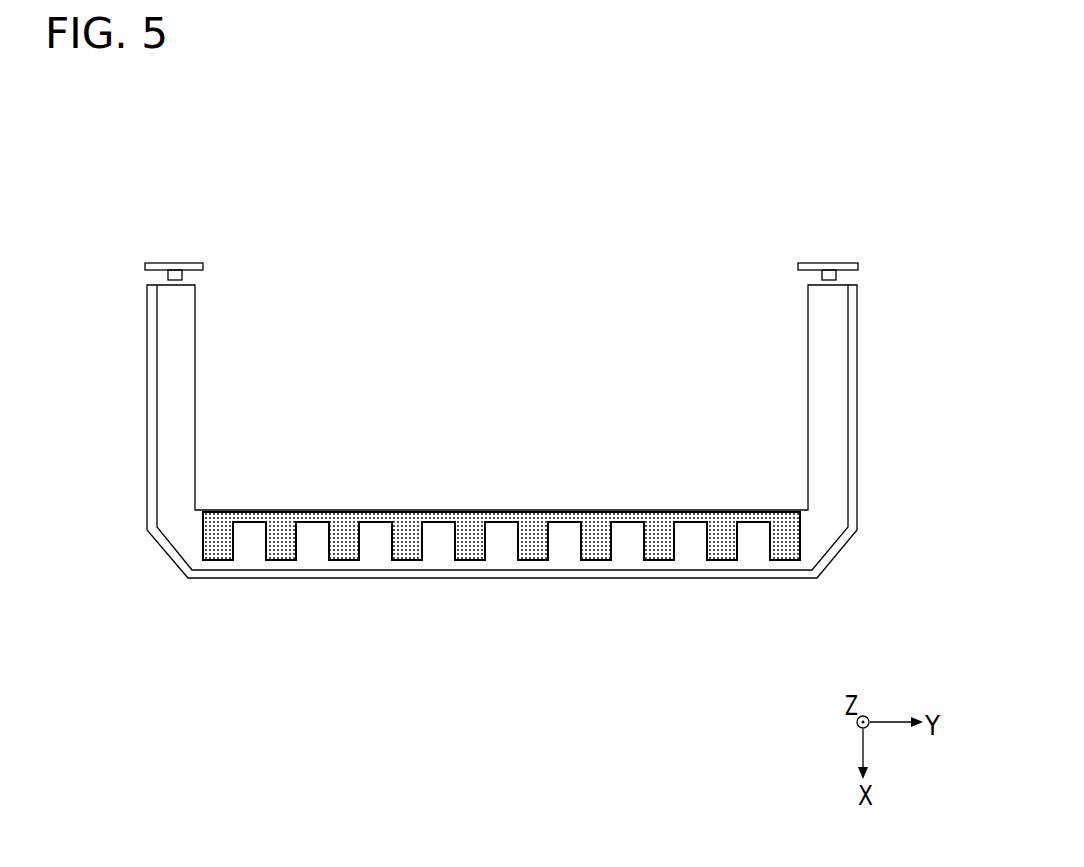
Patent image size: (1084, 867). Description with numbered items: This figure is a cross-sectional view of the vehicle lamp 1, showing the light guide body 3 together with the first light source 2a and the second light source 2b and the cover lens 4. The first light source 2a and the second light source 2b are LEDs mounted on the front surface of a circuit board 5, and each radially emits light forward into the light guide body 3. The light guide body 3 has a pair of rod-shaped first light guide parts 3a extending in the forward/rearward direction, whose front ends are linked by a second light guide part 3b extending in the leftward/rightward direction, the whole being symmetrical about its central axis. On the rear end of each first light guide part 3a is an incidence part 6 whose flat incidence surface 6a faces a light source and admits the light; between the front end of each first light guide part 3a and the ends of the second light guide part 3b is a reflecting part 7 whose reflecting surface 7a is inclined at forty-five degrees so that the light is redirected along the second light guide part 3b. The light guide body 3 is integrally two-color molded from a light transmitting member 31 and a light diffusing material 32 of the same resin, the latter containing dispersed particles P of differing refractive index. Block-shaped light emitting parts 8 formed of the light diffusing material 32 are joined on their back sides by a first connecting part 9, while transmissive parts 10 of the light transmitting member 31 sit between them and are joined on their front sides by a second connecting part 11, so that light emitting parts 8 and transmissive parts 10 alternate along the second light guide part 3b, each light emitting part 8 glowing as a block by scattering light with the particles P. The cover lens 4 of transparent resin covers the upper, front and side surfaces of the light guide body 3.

The vehicle lamp 1 is at (148, 173).
The first light source 2a is at (176, 274).
The second light source 2b is at (830, 274).
The light guide body 3 is at (514, 497).
The first light guide part 3a is at (168, 420).
The second light guide part 3b is at (533, 569).
The cover lens 4 is at (510, 578).
The circuit board 5 is at (143, 267).
The incidence part 6 is at (501, 304).
The incidence surface 6a is at (175, 286).
The reflecting part 7 is at (501, 641).
The reflecting surface 7a is at (168, 548).
The light emitting part 8 is at (718, 552).
The first connecting part 9 is at (752, 512).
The transmissive part 10 is at (692, 537).
The second connecting part 11 is at (725, 566).
The light transmitting member 31 is at (505, 539).
The light diffusing material 32 is at (739, 533).
The organic particles P is at (470, 512).